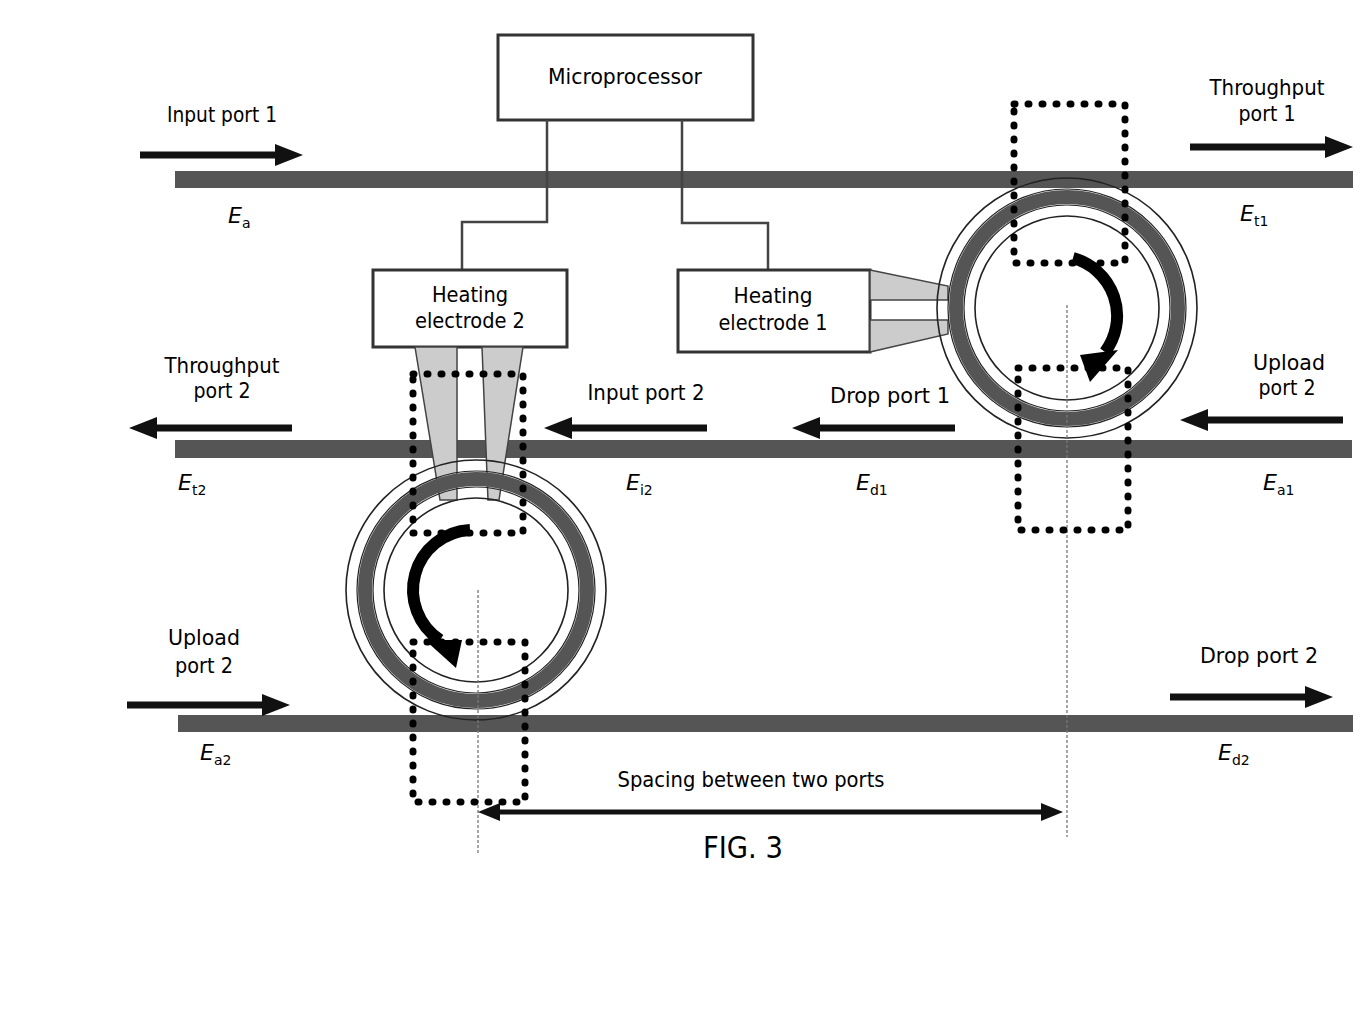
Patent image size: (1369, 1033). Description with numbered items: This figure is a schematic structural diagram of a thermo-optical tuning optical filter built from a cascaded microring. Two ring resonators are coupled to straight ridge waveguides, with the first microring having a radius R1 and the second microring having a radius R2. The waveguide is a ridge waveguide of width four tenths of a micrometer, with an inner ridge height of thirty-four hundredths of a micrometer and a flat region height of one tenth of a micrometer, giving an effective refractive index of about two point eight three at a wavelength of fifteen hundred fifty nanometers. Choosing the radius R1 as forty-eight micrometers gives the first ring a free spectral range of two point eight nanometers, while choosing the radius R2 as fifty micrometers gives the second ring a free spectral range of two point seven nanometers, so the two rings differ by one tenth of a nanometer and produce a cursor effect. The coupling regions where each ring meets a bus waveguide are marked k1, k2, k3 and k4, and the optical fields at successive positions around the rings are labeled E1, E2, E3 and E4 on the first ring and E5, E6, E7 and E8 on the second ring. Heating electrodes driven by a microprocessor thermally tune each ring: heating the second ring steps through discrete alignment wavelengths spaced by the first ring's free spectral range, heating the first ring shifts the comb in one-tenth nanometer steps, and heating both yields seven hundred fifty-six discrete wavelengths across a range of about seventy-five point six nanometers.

The radius of microring 1 R1 is at (1067, 308).
The radius of microring 2 R2 is at (476, 590).
The first coupling region (k1, t1) k1 is at (1069, 183).
The second coupling region (k2, t2) k2 is at (1073, 449).
The third coupling region (k3, t3) k3 is at (468, 453).
The fourth coupling region (k4, t4) k4 is at (469, 722).
The field E1 in first ring E1 is at (924, 234).
The field E2 in first ring E2 is at (1199, 234).
The field E3 in first ring E3 is at (1208, 371).
The field E4 in first ring E4 is at (927, 365).
The field E5 in second ring E5 is at (616, 532).
The field E6 in second ring E6 is at (329, 532).
The field E7 in second ring E7 is at (329, 643).
The field E8 in second ring E8 is at (616, 643).